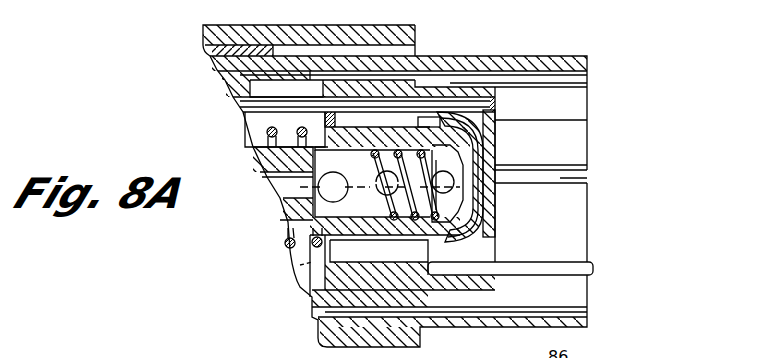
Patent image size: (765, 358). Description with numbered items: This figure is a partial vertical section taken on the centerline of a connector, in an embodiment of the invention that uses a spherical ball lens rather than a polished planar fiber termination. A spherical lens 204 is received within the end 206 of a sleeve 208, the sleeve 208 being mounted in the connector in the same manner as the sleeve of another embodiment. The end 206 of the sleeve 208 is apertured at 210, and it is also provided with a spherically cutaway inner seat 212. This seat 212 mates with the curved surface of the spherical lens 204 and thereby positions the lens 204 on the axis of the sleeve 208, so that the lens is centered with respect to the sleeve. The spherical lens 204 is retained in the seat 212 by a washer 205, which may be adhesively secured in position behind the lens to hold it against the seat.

The spherical lens 204 is at (463, 178).
The washer 205 is at (434, 150).
The end of sleeve 206 is at (466, 219).
The sleeve 208 is at (310, 232).
The aperture 210 is at (460, 183).
The spherically cutaway inner seat 212 is at (462, 194).